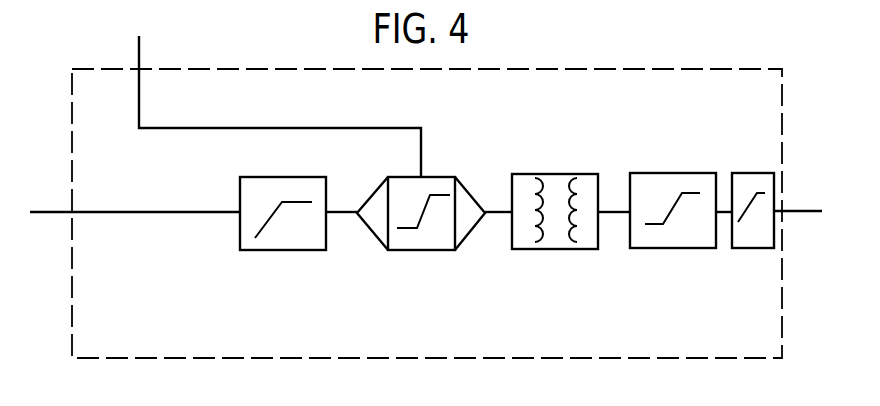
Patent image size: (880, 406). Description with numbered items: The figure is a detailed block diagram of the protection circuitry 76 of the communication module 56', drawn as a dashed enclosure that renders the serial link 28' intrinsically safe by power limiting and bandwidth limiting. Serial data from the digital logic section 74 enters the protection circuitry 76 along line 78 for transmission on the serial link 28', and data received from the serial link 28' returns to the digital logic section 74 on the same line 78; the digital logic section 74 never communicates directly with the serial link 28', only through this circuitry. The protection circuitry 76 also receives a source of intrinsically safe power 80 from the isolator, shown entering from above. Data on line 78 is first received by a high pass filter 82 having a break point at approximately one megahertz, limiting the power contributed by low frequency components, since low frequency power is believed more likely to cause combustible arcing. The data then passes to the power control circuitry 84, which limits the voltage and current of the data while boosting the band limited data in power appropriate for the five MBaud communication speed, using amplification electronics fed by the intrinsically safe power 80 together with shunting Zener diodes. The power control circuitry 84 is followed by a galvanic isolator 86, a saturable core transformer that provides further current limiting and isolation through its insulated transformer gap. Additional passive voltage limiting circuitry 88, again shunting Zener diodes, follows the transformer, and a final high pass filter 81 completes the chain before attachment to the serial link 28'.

The digital logic section 74 is at (29, 191).
The protection circuitry 76 is at (243, 68).
The line 78 is at (54, 213).
The intrinsically safe power 80 is at (139, 58).
The final high pass filter 81 is at (753, 248).
The high pass filter 82 is at (283, 250).
The power control circuitry 84 is at (418, 250).
The galvanic isolator 86 is at (533, 249).
The passive voltage limiting circuitry 88 is at (647, 248).
The serial link 28' is at (805, 188).
The circuit module 56' is at (523, 401).